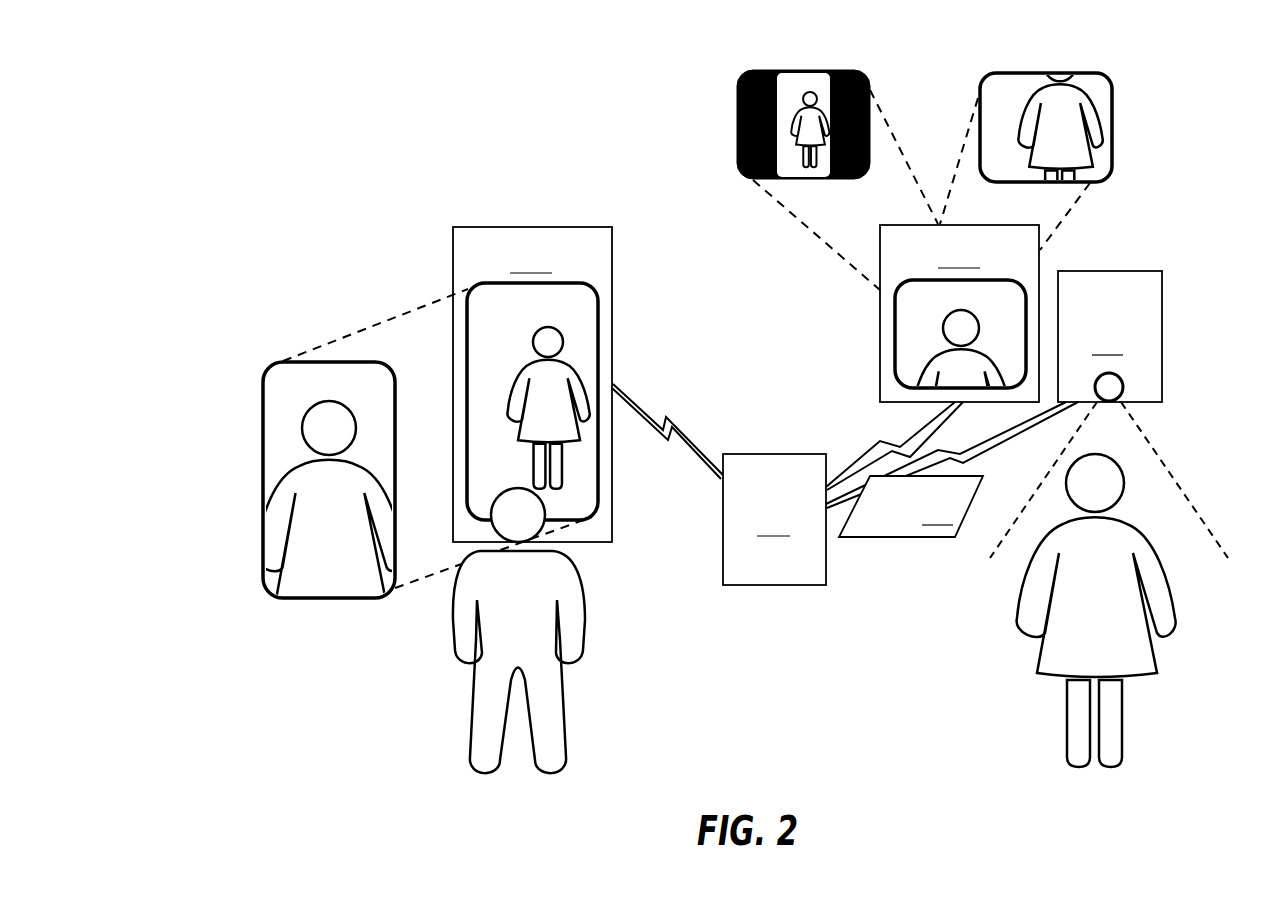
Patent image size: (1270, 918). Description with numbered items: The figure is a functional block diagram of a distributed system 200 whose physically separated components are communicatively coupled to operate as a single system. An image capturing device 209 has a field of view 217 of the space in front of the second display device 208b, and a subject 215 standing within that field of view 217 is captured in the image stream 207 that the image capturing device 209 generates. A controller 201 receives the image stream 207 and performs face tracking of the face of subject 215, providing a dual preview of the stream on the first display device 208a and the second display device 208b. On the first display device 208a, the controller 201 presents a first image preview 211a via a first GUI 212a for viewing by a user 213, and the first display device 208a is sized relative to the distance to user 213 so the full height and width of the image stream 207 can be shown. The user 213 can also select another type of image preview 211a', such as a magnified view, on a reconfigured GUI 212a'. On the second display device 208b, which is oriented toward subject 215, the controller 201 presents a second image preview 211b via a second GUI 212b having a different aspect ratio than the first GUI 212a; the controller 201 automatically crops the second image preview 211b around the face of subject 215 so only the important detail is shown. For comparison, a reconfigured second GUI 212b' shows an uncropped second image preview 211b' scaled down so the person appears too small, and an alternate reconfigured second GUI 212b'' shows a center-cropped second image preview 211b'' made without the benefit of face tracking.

The distributed system 200 is at (433, 229).
The controller 201 is at (845, 484).
The image stream 207 is at (911, 506).
The first display device 208a is at (577, 384).
The second display device 208b is at (918, 336).
The image capturing device 209 is at (1110, 336).
The first image preview 211a is at (602, 384).
The image preview 211a' is at (284, 504).
The second image preview 211b is at (904, 379).
The uncropped second image preview 211b' is at (783, 97).
The center-cropped second image preview 211b'' is at (1037, 119).
The first GUI 212a is at (584, 373).
The reconfigured GUI 212a' is at (378, 440).
The second GUI 212b is at (911, 358).
The reconfigured second GUI 212b' is at (789, 159).
The alternate reconfigured second GUI 212b'' is at (992, 136).
The user 213 is at (587, 610).
The subject 215 is at (1155, 662).
The field of view 217 is at (1160, 448).